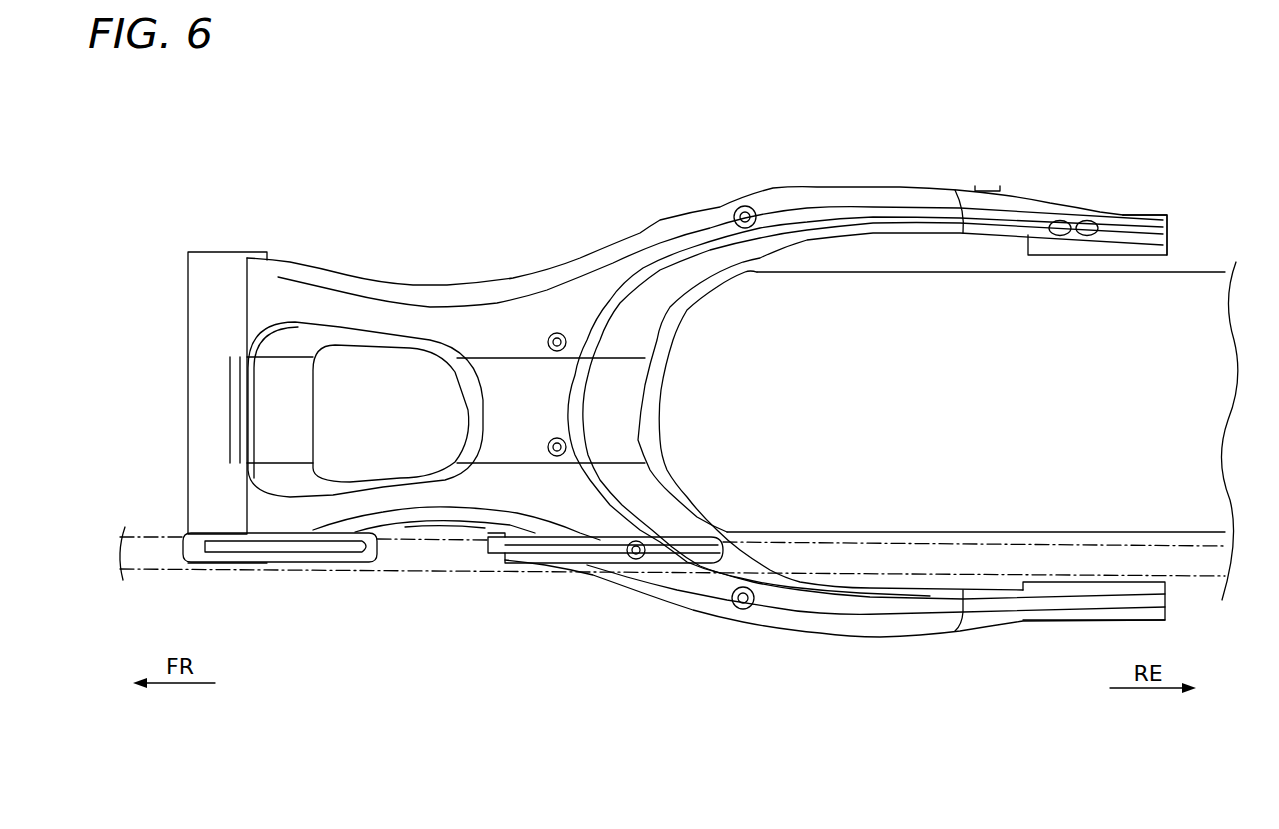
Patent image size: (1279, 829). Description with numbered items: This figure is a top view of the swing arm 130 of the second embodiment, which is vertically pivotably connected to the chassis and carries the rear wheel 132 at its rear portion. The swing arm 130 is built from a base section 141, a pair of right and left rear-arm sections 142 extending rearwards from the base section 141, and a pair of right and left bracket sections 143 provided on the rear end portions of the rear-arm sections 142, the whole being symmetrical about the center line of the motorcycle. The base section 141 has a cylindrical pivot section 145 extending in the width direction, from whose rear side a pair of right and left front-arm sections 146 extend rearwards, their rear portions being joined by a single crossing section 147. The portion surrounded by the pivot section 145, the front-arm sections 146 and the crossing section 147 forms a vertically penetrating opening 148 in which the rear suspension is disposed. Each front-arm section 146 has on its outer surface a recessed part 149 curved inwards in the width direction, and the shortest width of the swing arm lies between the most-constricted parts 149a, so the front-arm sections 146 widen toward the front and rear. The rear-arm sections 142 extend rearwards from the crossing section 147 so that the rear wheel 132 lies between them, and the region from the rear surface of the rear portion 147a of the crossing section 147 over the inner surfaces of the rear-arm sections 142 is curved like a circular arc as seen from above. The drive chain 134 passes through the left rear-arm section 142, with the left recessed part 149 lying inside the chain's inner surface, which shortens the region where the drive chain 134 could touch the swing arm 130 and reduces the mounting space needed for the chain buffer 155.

The swing arm 130 is at (675, 395).
The rear wheel 132 is at (1170, 300).
The drive chain 134 is at (362, 573).
The base section 141 is at (685, 347).
The rear-arm sections 142 is at (903, 185).
The bracket sections 143 is at (1125, 212).
The pivot section 145 is at (220, 250).
The front-arm sections 146 is at (373, 292).
The crossing section 147 is at (542, 297).
The rear portion of the crossing section 147a is at (585, 300).
The opening 148 is at (340, 383).
The recessed part 149 is at (452, 287).
The most-constricted parts 149a is at (428, 285).
The chain buffer 155 is at (297, 557).